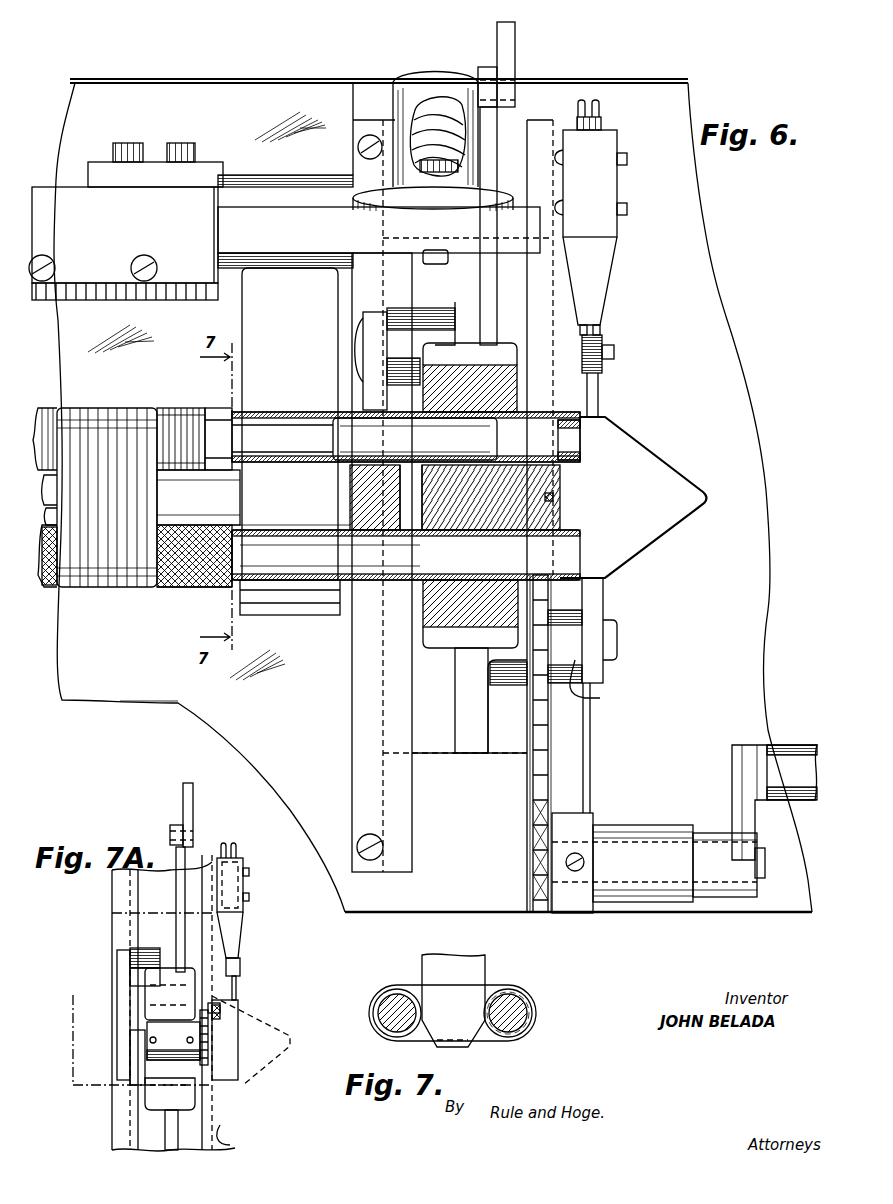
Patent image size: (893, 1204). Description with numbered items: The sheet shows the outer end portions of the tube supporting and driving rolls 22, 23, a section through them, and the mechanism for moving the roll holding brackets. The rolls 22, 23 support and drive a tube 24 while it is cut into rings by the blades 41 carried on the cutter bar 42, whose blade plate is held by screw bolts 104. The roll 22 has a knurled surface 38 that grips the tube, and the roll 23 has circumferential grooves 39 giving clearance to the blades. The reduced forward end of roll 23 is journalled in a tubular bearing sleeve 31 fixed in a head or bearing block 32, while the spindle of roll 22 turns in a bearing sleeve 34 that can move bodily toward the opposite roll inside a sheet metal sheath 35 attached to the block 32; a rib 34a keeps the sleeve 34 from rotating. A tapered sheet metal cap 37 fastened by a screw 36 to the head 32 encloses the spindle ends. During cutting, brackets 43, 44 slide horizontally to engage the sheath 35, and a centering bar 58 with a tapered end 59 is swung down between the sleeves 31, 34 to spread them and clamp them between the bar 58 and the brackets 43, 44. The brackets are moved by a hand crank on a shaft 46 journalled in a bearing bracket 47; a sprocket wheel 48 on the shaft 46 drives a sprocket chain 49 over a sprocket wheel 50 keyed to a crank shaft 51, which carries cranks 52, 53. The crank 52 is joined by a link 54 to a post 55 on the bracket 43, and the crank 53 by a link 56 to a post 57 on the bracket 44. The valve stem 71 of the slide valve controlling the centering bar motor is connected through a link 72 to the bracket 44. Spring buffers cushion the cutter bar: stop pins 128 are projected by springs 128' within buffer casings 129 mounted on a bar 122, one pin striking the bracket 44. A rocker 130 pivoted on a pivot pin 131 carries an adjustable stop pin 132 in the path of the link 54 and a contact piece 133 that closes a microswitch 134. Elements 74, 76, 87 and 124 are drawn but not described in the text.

In FIG. 6, the tube supporting and driving roll 22 is at (185, 588).
In FIG. 7, the tube supporting and driving roll 22 is at (522, 1000).
In FIG. 6, the tube supporting and driving roll 23 is at (216, 407).
In FIG. 7, the tube supporting and driving roll 23 is at (393, 998).
In FIG. 6, the tube 24 is at (120, 400).
In FIG. 6, the tubular bearing sleeve 31 is at (562, 462).
In FIG. 7, the tubular bearing sleeve 31 is at (374, 1013).
In FIG. 6, the head or bearing block 32 is at (552, 481).
In FIG. 7, the head or bearing block 32 is at (418, 1036).
In FIG. 6, the bearing sleeve 34 is at (320, 530).
In FIG. 7, the bearing sleeve 34 is at (532, 1013).
In FIG. 6, the rib 34a is at (238, 527).
In FIG. 7, the rib 34a is at (490, 1043).
In FIG. 6, the sheet metal sheath 35 is at (325, 396).
In FIG. 7, the sheet metal sheath 35 is at (516, 988).
In FIG. 6, the screw 36 is at (556, 497).
In FIG. 6, the sheet metal cap 37 is at (660, 423).
In FIG. 6, the knurled surface 38 is at (210, 588).
In FIG. 6, the circumferential grooves 39 is at (180, 406).
In FIG. 6, the blades 41 is at (180, 300).
In FIG. 6, the cutter bar 42 is at (60, 185).
In FIG. 6, the bracket 43 is at (448, 628).
In FIG. 7A, the bracket 43 is at (157, 1092).
In FIG. 6, the bracket 44 is at (500, 396).
In FIG. 7A, the bracket 44 is at (160, 1005).
In FIG. 6, the shaft 46 is at (772, 760).
In FIG. 6, the bearing bracket 47 is at (657, 832).
In FIG. 6, the sprocket wheel 48 is at (532, 882).
In FIG. 6, the sprocket chain 49 is at (552, 752).
In FIG. 7A, the sprocket wheel 50 is at (206, 1056).
In FIG. 7A, the crank shaft 51 is at (180, 1058).
In FIG. 7A, the crank 52 is at (218, 1010).
In FIG. 7A, the crank 53 is at (133, 1067).
In FIG. 6, the link 54 is at (600, 598).
In FIG. 7A, the link 54 is at (232, 1042).
In FIG. 6, the post 55 is at (595, 684).
In FIG. 7A, the post 55 is at (230, 1145).
In FIG. 6, the link 56 is at (362, 338).
In FIG. 7A, the link 56 is at (122, 1012).
In FIG. 6, the post 57 is at (402, 318).
In FIG. 7A, the post 57 is at (140, 952).
In FIG. 6, the centering bar 58 is at (356, 481).
In FIG. 7, the centering bar 58 is at (472, 970).
In FIG. 7, the tapered end 59 is at (472, 1046).
In FIG. 6, the valve stem 71 is at (518, 48).
In FIG. 7A, the valve stem 71 is at (194, 808).
In FIG. 6, the link 72 is at (494, 180).
In FIG. 7A, the link 72 is at (176, 888).
In FIG. 6, the tube 74 is at (205, 504).
In FIG. 6, the plate 76 is at (320, 614).
In FIG. 6, the bar 87 is at (147, 162).
In FIG. 6, the screw bolts 104 is at (137, 267).
In FIG. 6, the bar 122 is at (305, 202).
In FIG. 6, the housing edge 124 is at (178, 703).
In FIG. 6, the stop pins 128 is at (439, 269).
In FIG. 6, the springs 128' is at (392, 136).
In FIG. 6, the buffer casings 129 is at (440, 80).
In FIG. 7A, the rocker 130 is at (238, 988).
In FIG. 7A, the pivot pin 131 is at (242, 965).
In FIG. 7A, the adjustable stop pin 132 is at (224, 1013).
In FIG. 7A, the switch operating contact piece 133 is at (240, 890).
In FIG. 7A, the microswitch 134 is at (236, 865).